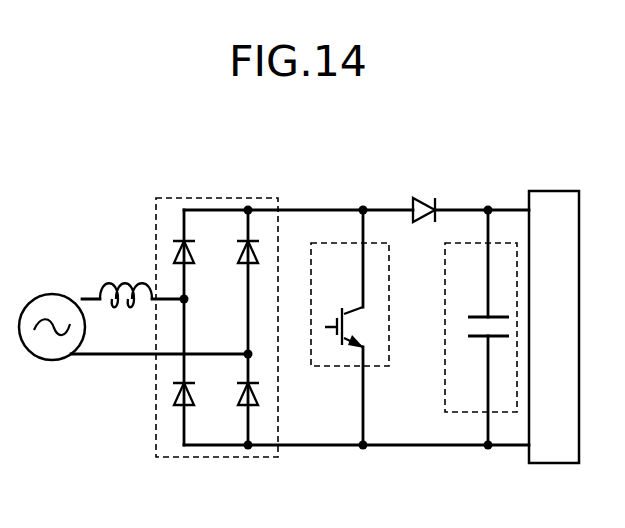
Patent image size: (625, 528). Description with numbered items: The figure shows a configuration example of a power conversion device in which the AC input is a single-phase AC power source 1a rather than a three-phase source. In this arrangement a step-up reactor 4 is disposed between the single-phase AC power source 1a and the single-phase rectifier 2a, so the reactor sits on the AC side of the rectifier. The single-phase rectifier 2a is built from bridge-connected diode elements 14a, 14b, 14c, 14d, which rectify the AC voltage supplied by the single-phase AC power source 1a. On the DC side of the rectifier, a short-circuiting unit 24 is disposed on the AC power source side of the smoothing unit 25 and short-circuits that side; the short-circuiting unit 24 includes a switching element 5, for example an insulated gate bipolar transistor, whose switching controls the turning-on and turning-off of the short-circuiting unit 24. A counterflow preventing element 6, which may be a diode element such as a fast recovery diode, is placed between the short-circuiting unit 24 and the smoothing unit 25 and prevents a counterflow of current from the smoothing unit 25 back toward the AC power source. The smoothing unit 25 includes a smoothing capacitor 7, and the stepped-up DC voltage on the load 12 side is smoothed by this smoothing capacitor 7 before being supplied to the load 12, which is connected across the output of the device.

The single-phase AC power source 1a is at (52, 296).
The step-up reactor 4 is at (125, 283).
The single-phase rectifier 2a is at (278, 410).
The diode element 14a is at (173, 258).
The diode element 14b is at (238, 258).
The diode element 14c is at (182, 407).
The diode element 14d is at (243, 407).
The short-circuiting unit 24 is at (331, 243).
The switching element 5 is at (361, 307).
The counterflow preventing element 6 is at (424, 198).
The smoothing unit 25 is at (508, 243).
The smoothing capacitor 7 is at (478, 316).
The load 12 is at (555, 191).